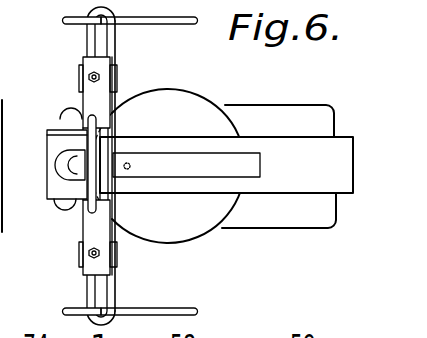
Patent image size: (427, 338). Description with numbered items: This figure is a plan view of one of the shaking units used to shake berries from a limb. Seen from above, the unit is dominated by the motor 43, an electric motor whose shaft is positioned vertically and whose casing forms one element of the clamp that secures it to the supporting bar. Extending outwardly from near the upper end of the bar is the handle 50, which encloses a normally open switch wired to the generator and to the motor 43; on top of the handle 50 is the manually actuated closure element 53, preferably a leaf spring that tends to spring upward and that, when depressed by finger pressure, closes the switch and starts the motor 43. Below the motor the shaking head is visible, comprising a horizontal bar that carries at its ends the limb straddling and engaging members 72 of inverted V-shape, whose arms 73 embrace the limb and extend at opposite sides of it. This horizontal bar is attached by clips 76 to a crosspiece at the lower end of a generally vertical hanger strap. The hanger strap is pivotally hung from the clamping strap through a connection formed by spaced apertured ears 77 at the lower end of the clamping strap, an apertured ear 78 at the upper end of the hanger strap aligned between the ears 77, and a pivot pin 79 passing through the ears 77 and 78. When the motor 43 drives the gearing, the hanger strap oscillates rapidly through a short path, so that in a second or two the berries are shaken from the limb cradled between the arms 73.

The motor 43 is at (168, 166).
The handle 50 is at (226, 165).
The closure element 53 is at (170, 170).
The limb straddling and engaging members 72 is at (62, 23).
The arms 73 is at (184, 24).
The clips 76 is at (118, 71).
The apertured ears 77 is at (53, 133).
The apertured ear 78 is at (56, 166).
The pivot pin 79 is at (66, 201).